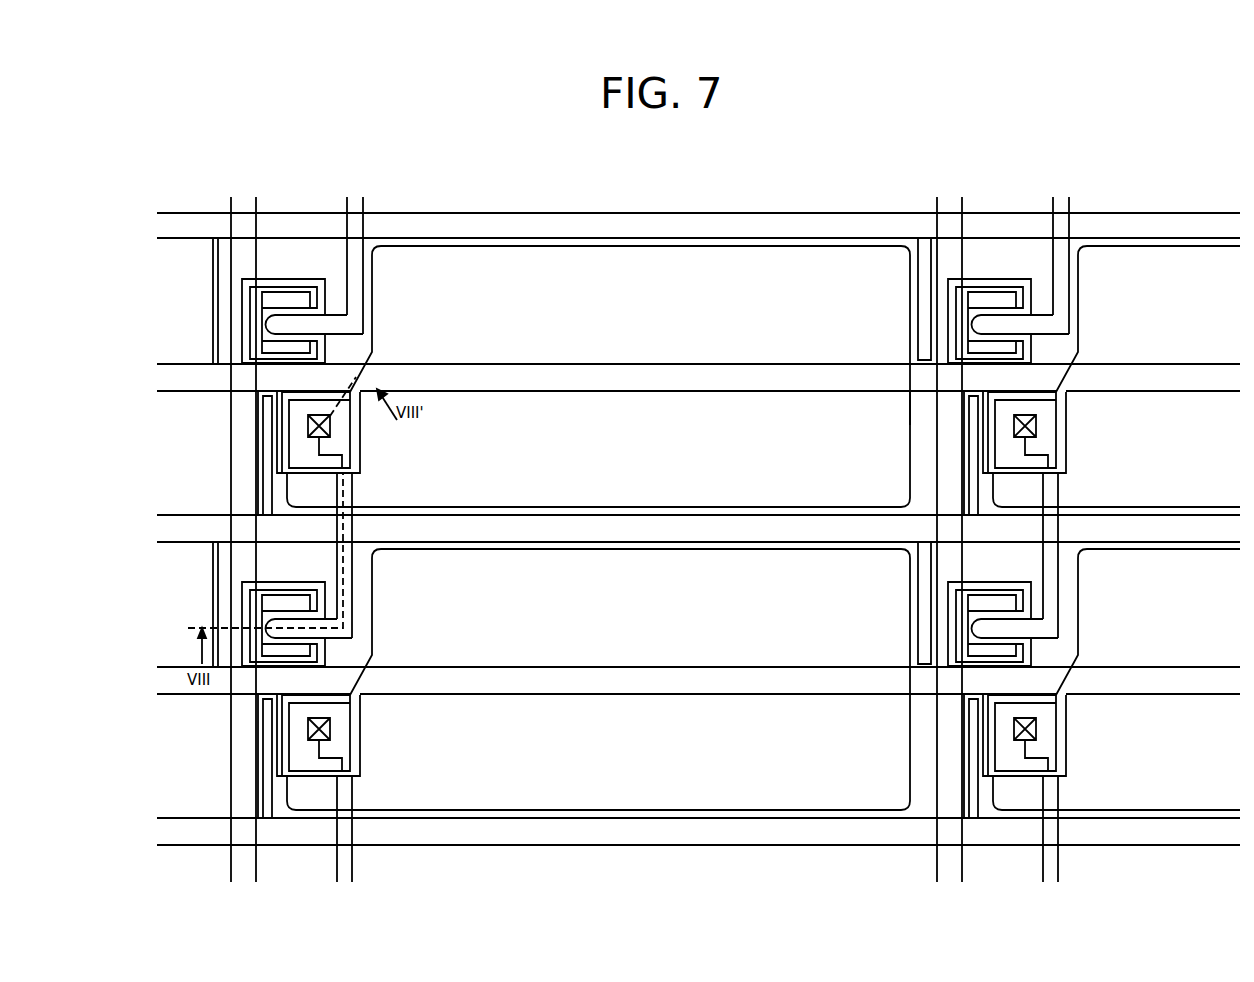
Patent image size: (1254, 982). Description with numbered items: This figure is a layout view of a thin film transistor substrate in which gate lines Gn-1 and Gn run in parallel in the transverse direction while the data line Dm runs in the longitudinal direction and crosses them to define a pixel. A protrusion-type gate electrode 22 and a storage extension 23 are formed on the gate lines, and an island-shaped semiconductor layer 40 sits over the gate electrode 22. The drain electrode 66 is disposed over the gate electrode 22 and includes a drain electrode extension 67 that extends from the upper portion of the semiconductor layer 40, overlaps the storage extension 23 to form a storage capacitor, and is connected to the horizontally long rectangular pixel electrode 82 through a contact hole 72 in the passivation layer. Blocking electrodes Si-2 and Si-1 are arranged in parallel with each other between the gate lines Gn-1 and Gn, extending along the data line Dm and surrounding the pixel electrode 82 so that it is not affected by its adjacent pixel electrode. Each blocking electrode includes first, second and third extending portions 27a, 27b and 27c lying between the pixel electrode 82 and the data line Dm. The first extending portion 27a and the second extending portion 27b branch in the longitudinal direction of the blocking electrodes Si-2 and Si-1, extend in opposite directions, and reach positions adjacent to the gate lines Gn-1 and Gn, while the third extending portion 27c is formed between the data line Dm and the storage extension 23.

The data line Dm is at (257, 204).
The blocking electrode Si-2 is at (165, 227).
The blocking electrode Si-1 is at (173, 545).
The gate line Gn-1 is at (175, 391).
The gate line Gn is at (175, 694).
The pixel electrode 82 is at (574, 246).
The first extending portion 27a is at (927, 583).
The second extending portion 27b is at (917, 410).
The third extending portion 27c is at (267, 412).
The storage extension 23 is at (272, 434).
The drain electrode extension 67 is at (300, 472).
The contact hole 72 is at (332, 430).
The gate electrode 22 is at (243, 598).
The semiconductor layer 40 is at (246, 623).
The drain electrode 66 is at (283, 637).